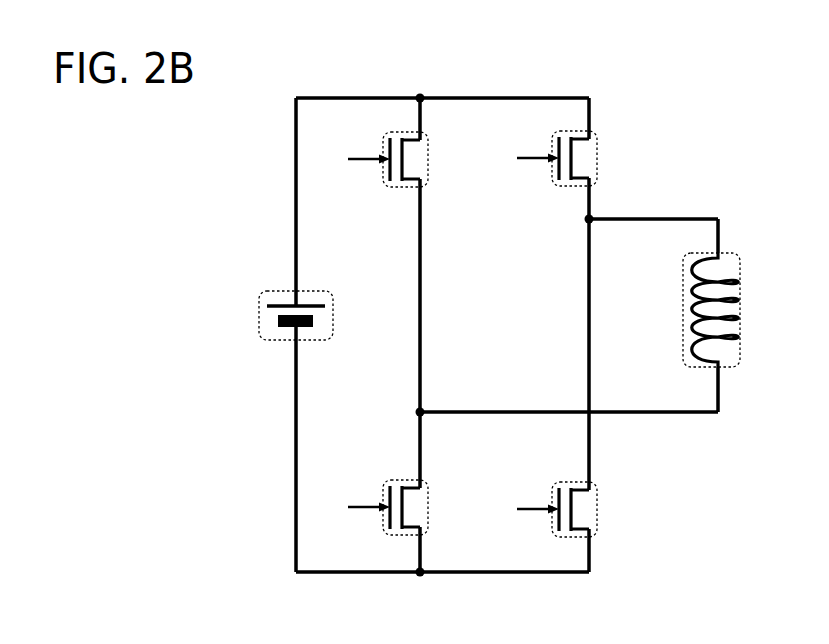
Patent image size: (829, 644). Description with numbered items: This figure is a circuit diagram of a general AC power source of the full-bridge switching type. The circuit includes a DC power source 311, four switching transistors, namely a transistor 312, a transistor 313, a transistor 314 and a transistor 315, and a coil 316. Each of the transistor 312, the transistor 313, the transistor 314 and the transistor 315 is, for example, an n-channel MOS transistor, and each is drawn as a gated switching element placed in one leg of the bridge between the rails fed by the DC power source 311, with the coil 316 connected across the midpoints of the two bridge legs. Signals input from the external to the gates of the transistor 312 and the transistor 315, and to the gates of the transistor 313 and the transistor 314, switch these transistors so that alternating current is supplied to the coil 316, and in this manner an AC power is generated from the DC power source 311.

The DC power source 311 is at (258, 319).
The transistor 312 is at (392, 188).
The transistor 313 is at (390, 479).
The transistor 314 is at (600, 160).
The transistor 315 is at (600, 511).
The coil 316 is at (681, 306).